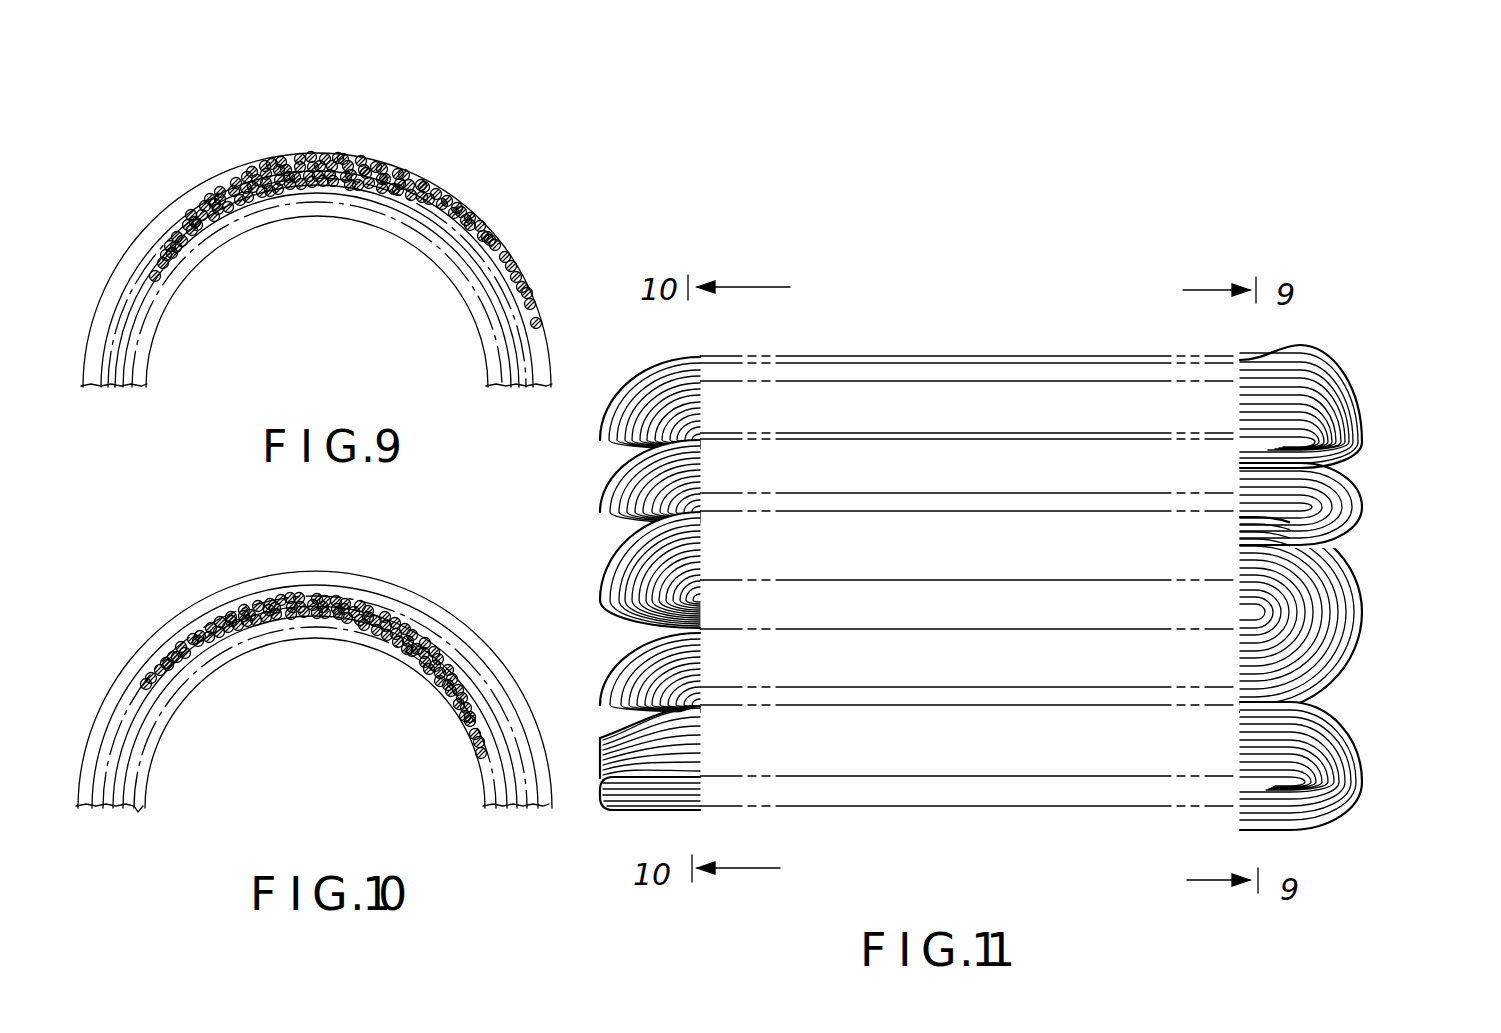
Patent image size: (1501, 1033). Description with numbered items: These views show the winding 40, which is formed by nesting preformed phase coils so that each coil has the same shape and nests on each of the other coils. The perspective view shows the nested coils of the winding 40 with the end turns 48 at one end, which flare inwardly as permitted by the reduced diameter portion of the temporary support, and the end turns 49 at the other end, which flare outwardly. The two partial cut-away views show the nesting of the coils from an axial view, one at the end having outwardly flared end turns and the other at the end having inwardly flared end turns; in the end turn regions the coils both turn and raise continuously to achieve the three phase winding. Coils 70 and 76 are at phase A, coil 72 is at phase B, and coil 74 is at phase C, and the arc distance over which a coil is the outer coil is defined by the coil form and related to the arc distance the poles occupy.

In FIG. 11, the winding 40 is at (1388, 429).
In FIG. 11, the end turns 48 is at (650, 350).
In FIG. 11, the end turns 49 is at (1345, 341).
In FIG. 9, the coil 70 is at (377, 165).
In FIG. 10, the coil 70 is at (342, 597).
In FIG. 11, the coil 70 is at (600, 707).
In FIG. 9, the coil 72 is at (436, 188).
In FIG. 10, the coil 72 is at (283, 597).
In FIG. 11, the coil 72 is at (600, 591).
In FIG. 9, the coil 74 is at (486, 228).
In FIG. 10, the coil 74 is at (207, 623).
In FIG. 11, the coil 74 is at (600, 505).
In FIG. 9, the coil 76 is at (533, 304).
In FIG. 10, the coil 76 is at (360, 643).
In FIG. 11, the coil 76 is at (600, 462).